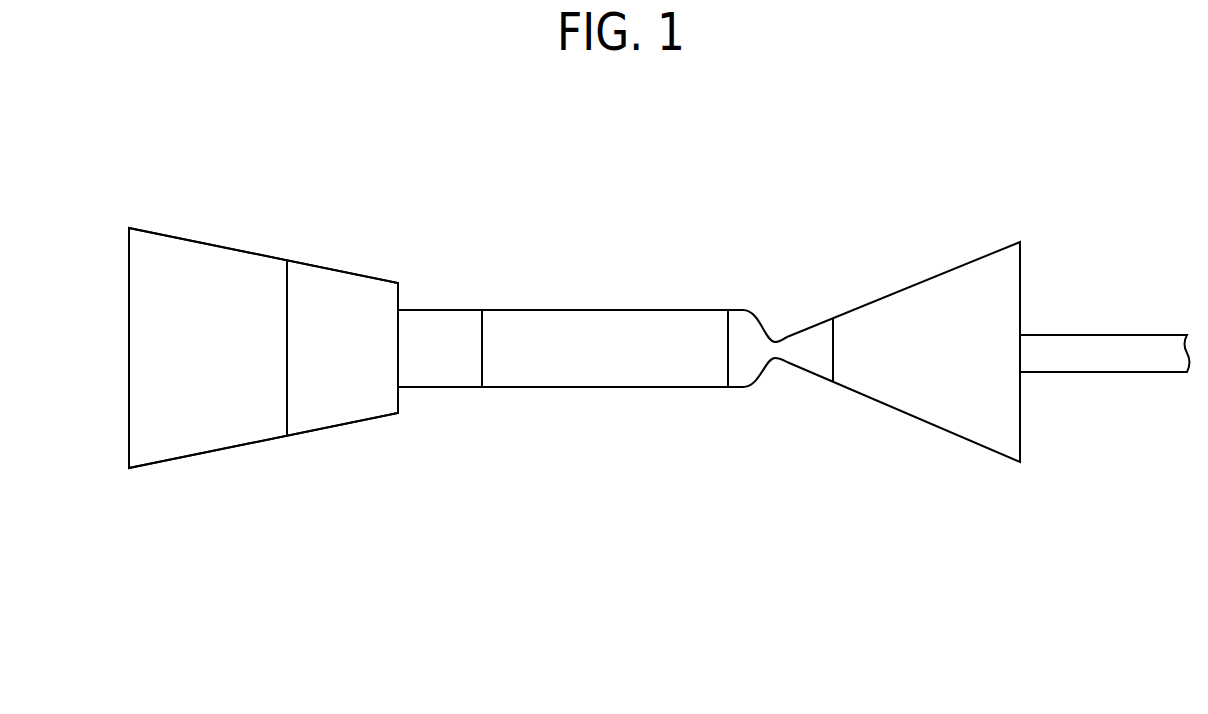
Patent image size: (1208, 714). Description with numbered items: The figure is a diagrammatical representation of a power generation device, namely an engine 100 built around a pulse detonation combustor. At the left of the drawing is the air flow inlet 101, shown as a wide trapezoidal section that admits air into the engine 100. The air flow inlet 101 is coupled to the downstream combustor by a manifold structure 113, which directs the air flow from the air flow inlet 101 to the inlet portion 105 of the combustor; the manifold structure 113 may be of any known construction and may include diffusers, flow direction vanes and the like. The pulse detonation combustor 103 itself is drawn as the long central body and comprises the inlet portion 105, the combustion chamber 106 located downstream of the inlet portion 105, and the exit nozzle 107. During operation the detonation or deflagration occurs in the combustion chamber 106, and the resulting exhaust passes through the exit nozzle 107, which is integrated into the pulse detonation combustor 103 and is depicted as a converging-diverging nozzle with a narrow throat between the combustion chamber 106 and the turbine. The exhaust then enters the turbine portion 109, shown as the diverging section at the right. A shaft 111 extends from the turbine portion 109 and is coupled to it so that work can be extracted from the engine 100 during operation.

The engine 100 is at (555, 170).
The air flow inlet 101 is at (217, 260).
The pulse detonation combustor 103 is at (600, 277).
The inlet portion 105 is at (438, 320).
The combustion chamber 106 is at (588, 375).
The exit nozzle 107 is at (748, 332).
The turbine portion 109 is at (910, 298).
The shaft 111 is at (1095, 333).
The manifold structure 113 is at (337, 413).